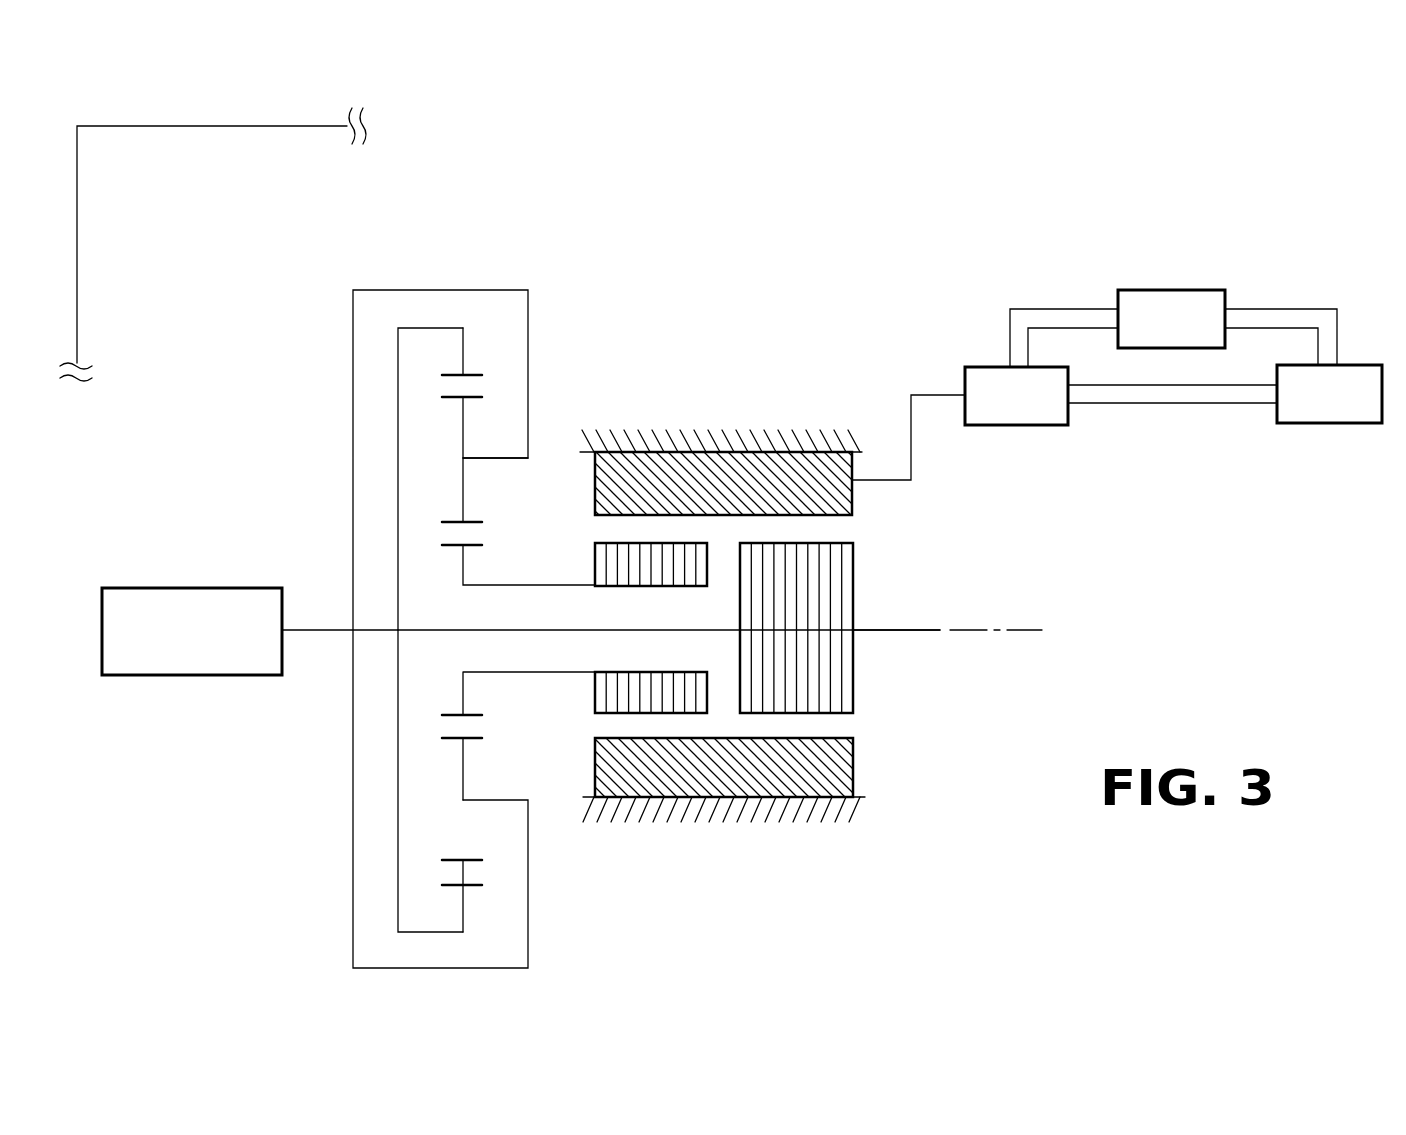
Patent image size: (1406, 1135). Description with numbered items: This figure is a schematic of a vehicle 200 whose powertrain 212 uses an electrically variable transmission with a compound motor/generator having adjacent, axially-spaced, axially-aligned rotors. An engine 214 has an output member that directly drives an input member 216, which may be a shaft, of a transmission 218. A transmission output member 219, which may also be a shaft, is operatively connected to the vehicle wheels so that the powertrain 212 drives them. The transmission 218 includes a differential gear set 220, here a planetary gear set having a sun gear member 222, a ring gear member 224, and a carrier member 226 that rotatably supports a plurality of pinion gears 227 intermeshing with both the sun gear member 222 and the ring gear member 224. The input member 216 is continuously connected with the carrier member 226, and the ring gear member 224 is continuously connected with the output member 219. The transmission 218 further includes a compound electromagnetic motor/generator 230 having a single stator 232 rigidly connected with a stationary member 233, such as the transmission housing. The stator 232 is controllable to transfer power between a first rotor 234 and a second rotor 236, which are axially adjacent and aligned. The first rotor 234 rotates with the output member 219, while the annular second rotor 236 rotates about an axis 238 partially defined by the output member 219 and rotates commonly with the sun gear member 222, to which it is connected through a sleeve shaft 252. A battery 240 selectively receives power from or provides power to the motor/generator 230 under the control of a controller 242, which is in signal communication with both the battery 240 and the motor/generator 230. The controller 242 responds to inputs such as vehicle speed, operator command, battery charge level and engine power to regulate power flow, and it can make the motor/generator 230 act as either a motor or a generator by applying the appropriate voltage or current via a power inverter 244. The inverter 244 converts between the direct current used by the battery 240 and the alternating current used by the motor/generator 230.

The vehicle 200 is at (235, 126).
The powertrain 212 is at (578, 285).
The engine 214 is at (218, 588).
The input member 216 is at (322, 632).
The transmission 218 is at (691, 340).
The transmission output member 219 is at (925, 630).
The differential gear set 220 is at (513, 752).
The sun gear member 222 is at (473, 550).
The ring gear member 224 is at (470, 372).
The carrier member 226 is at (500, 460).
The pinion gears 227 is at (460, 423).
The compound electromagnetic motor/generator 230 is at (868, 526).
The stator 232 is at (855, 498).
The stationary member 233 is at (818, 452).
The first rotor 234 is at (853, 587).
The second rotor 236 is at (590, 697).
The axis 238 is at (1022, 625).
The battery 240 is at (1333, 423).
The controller 242 is at (1185, 290).
The power inverter 244 is at (990, 367).
The sleeve shaft 252 is at (502, 672).